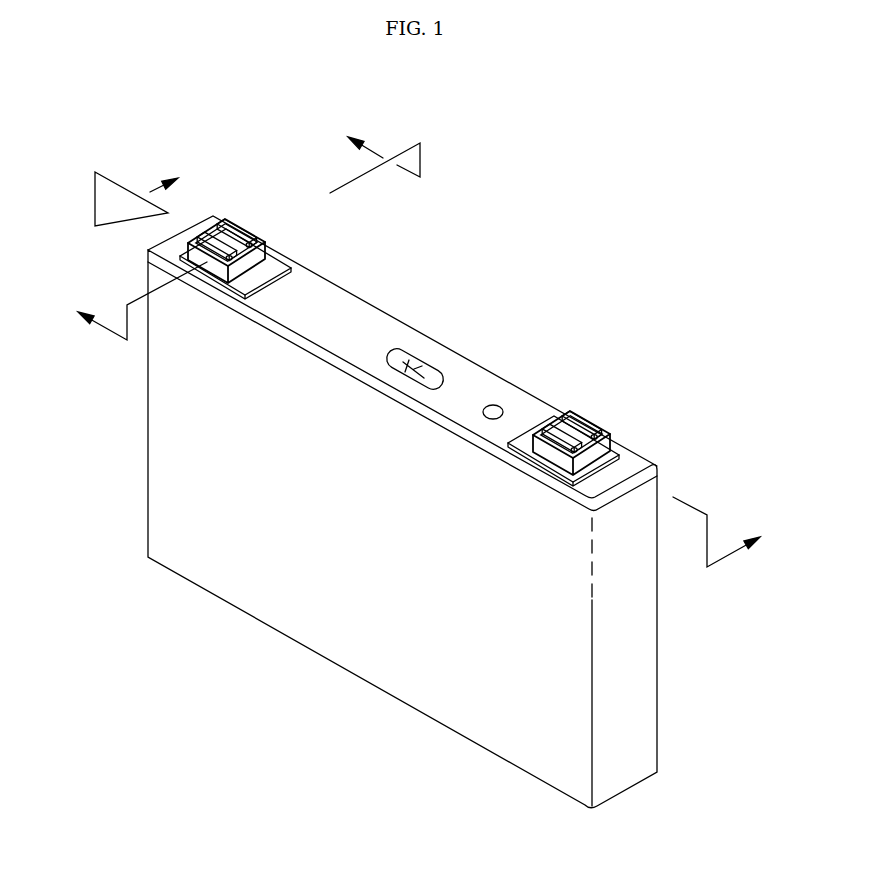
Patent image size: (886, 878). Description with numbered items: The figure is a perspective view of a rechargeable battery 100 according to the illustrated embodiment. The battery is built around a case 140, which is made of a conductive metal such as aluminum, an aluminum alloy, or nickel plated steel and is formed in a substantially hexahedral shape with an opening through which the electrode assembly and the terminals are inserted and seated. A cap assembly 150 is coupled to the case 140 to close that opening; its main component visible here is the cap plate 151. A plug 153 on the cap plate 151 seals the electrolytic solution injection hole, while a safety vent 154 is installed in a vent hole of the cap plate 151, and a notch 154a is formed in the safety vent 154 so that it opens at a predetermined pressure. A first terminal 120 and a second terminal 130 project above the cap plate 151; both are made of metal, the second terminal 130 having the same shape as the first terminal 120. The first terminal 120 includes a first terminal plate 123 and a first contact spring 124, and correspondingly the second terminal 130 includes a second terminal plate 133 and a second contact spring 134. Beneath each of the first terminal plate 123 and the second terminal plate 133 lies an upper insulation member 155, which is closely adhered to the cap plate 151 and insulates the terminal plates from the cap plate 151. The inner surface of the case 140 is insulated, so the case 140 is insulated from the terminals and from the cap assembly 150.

The rechargeable battery 100 is at (636, 226).
The first terminal 120 is at (257, 203).
The first terminal plate 123 is at (263, 238).
The first contact spring 124 is at (244, 212).
The second terminal 130 is at (611, 404).
The second terminal plate 133 is at (609, 431).
The second contact spring 134 is at (590, 409).
The case 140 is at (352, 657).
The cap assembly 150 is at (384, 298).
The cap plate 151 is at (330, 297).
The plug 153 is at (493, 405).
The safety vent 154 is at (413, 352).
The notch 154a is at (425, 370).
The upper insulation member 155 is at (272, 268).